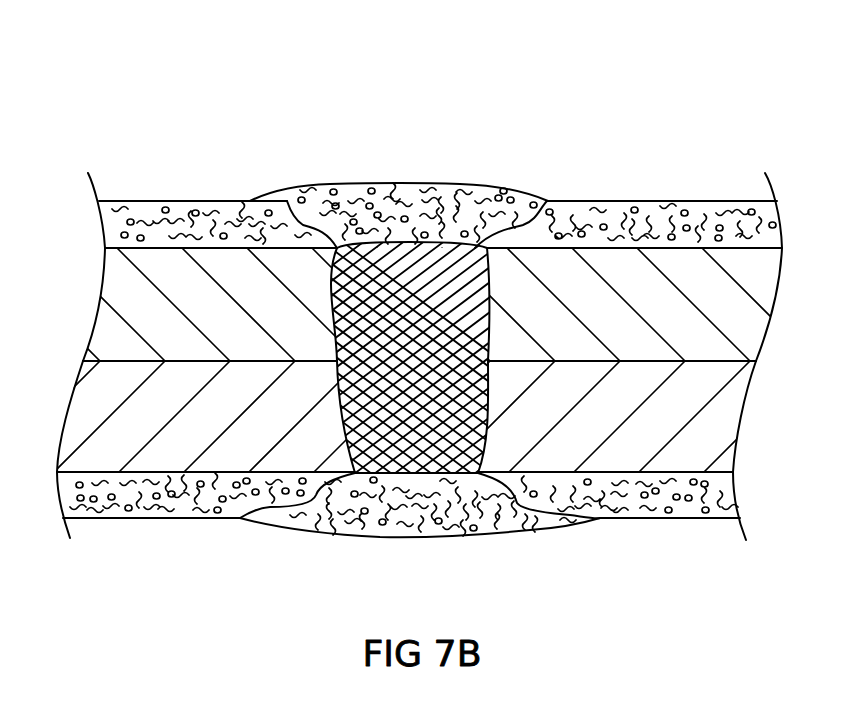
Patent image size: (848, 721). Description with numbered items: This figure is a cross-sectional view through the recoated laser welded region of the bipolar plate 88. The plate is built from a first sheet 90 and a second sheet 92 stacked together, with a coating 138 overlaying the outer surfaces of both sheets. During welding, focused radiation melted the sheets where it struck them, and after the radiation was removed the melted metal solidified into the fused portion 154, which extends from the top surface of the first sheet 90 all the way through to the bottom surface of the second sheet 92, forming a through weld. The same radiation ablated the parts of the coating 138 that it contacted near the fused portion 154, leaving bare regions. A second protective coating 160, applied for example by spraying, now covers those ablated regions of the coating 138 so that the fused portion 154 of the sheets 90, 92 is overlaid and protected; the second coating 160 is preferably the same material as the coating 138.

The bipolar plate 88 is at (583, 110).
The first sheet 90 is at (113, 285).
The second sheet 92 is at (70, 433).
The coating 138 is at (182, 213).
The fused portion 154 is at (473, 290).
The second protective coating 160 is at (365, 190).